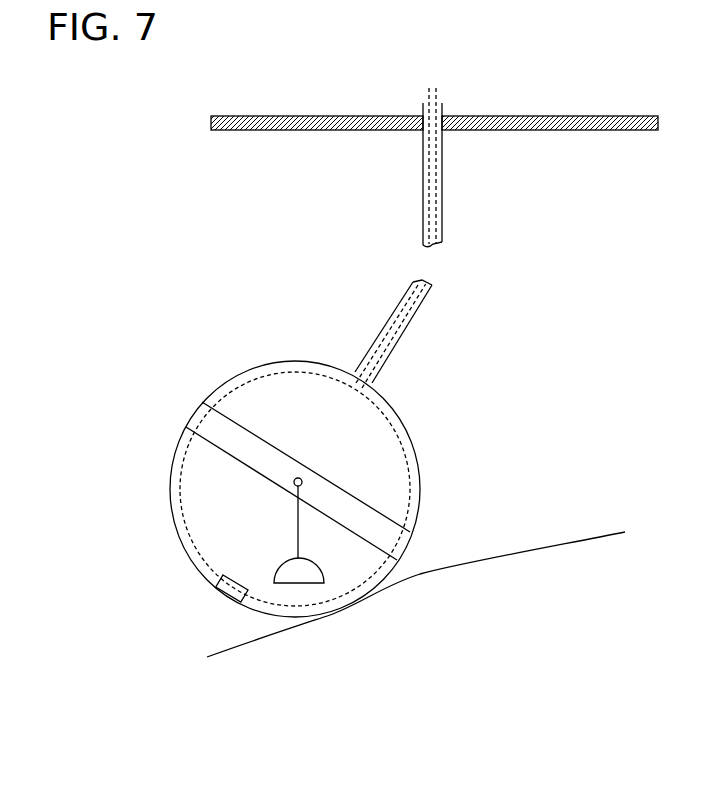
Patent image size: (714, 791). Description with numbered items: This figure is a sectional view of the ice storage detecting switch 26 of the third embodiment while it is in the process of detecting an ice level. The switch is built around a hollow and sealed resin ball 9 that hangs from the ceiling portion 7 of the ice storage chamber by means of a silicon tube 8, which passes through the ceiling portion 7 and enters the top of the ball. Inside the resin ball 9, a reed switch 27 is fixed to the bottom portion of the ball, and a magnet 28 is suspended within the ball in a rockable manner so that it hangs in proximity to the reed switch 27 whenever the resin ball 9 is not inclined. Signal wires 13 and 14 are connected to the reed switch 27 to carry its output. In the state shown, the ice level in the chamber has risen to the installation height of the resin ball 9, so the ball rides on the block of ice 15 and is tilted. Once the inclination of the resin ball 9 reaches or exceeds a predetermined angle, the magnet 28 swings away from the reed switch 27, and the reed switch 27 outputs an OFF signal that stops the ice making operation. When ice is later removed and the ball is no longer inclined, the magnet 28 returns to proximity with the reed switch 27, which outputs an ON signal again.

The ceiling portion 7 is at (597, 130).
The silicon tube 8 is at (393, 350).
The resin ball 9 is at (418, 458).
The signal wire 13 is at (273, 378).
The signal wire 14 is at (397, 440).
The ice 15 is at (522, 553).
The ice storage detecting switch 26 is at (345, 268).
The reed switch 27 is at (220, 592).
The magnet 28 is at (283, 562).